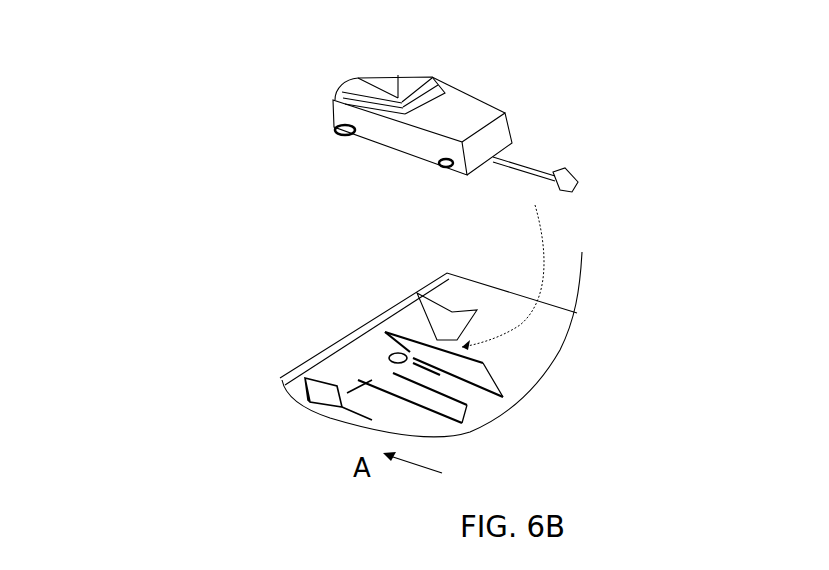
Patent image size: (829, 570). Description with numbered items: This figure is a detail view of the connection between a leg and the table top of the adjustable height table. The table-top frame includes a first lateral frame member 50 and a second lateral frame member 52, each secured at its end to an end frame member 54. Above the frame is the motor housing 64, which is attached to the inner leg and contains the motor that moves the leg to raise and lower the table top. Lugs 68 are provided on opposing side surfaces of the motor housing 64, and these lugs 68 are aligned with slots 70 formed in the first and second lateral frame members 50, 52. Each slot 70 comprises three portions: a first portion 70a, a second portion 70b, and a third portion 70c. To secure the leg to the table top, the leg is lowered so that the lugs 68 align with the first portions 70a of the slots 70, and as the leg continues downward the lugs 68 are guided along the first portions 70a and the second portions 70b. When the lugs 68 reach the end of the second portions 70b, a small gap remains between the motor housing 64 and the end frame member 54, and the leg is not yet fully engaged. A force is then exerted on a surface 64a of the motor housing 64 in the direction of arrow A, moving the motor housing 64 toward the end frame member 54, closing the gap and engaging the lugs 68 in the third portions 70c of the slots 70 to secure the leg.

The first lateral frame member 50 is at (403, 418).
The second lateral frame member 52 is at (478, 363).
The end frame member 54 is at (297, 393).
The motor housing 64 is at (452, 105).
The surface of the motor housing 64a is at (500, 130).
The lug 68 is at (337, 128).
The slot 70 is at (516, 375).
The first portion 70a is at (410, 352).
The second portion 70b is at (413, 363).
The third portion 70c is at (387, 357).